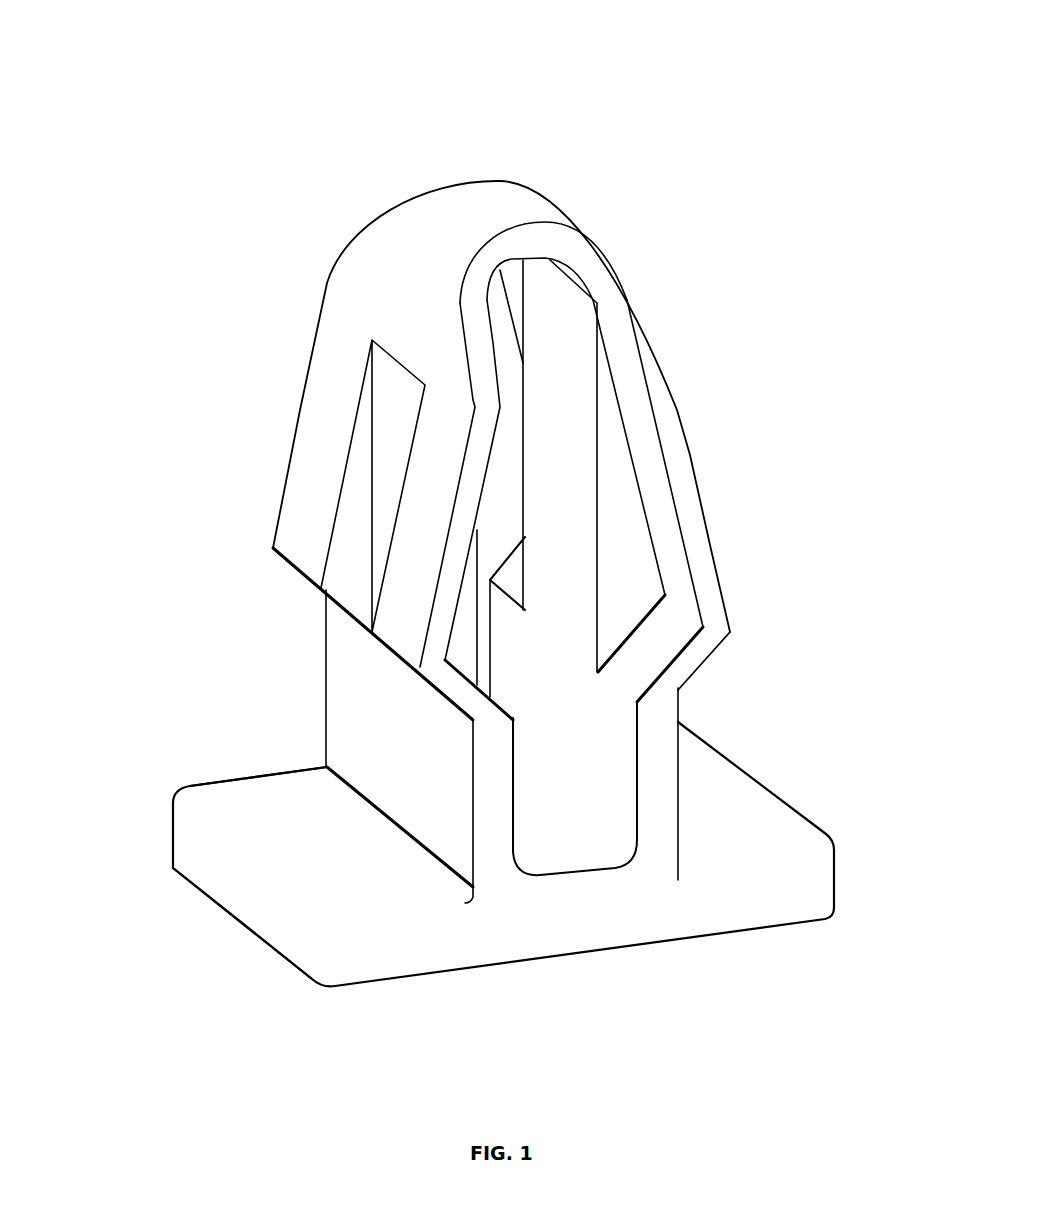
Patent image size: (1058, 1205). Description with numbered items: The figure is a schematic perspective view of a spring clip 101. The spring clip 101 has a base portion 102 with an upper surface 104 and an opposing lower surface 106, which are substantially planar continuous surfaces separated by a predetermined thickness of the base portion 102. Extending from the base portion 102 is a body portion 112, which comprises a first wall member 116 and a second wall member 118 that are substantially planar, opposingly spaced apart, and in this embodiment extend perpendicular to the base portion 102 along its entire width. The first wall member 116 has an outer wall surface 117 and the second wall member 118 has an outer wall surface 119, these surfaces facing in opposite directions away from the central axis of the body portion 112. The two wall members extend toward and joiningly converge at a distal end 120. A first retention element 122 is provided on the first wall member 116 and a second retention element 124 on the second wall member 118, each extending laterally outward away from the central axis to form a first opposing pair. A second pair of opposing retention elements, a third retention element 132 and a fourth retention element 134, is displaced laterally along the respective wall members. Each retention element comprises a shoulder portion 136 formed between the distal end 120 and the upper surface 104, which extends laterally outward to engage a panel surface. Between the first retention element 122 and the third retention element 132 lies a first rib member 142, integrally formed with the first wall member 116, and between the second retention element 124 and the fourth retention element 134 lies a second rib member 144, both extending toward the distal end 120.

The spring clip 101 is at (276, 178).
The base portion 102 is at (288, 878).
The upper surface 104 is at (217, 781).
The lower surface 106 is at (208, 902).
The body portion 112 is at (262, 491).
The first wall member 116 is at (500, 803).
The outer wall surface 117 is at (363, 689).
The second wall member 118 is at (657, 758).
The outer wall surface 119 is at (678, 703).
The distal end 120 is at (500, 193).
The first retention element 122 is at (410, 578).
The second retention element 124 is at (693, 552).
The third retention element 132 is at (308, 508).
The fourth retention element 134 is at (513, 287).
The shoulder portion 136 is at (272, 549).
The first rib member 142 is at (393, 413).
The second rib member 144 is at (565, 408).